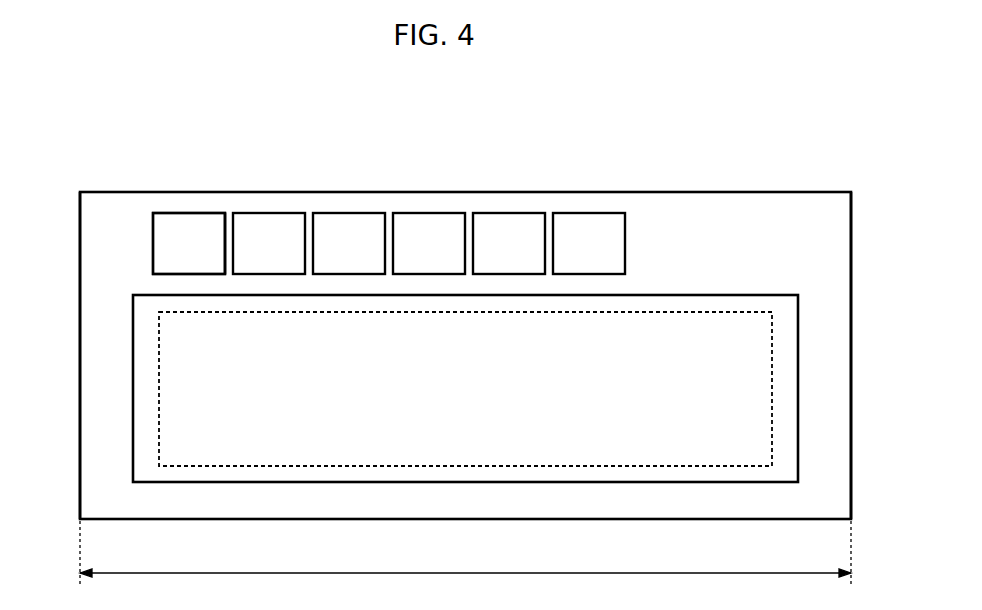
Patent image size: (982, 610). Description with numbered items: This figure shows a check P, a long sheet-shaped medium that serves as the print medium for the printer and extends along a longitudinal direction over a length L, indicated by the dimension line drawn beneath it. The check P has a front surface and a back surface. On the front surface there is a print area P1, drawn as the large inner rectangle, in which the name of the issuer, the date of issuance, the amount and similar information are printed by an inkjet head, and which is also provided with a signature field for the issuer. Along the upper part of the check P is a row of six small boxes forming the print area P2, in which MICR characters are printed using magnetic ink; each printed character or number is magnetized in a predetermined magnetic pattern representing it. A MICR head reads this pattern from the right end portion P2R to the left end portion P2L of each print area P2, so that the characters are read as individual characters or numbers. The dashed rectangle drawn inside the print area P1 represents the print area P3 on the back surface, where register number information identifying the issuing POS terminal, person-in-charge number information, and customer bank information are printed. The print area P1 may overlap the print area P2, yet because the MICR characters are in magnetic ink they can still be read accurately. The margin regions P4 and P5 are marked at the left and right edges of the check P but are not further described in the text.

The check P is at (738, 192).
The print area P1 is at (688, 295).
The print area P2 is at (185, 213).
The left end portion P2L is at (153, 241).
The right end portion P2R is at (231, 240).
The print area P3 is at (741, 312).
The left margin P4 is at (80, 354).
The right margin P5 is at (851, 352).
The length L is at (465, 553).